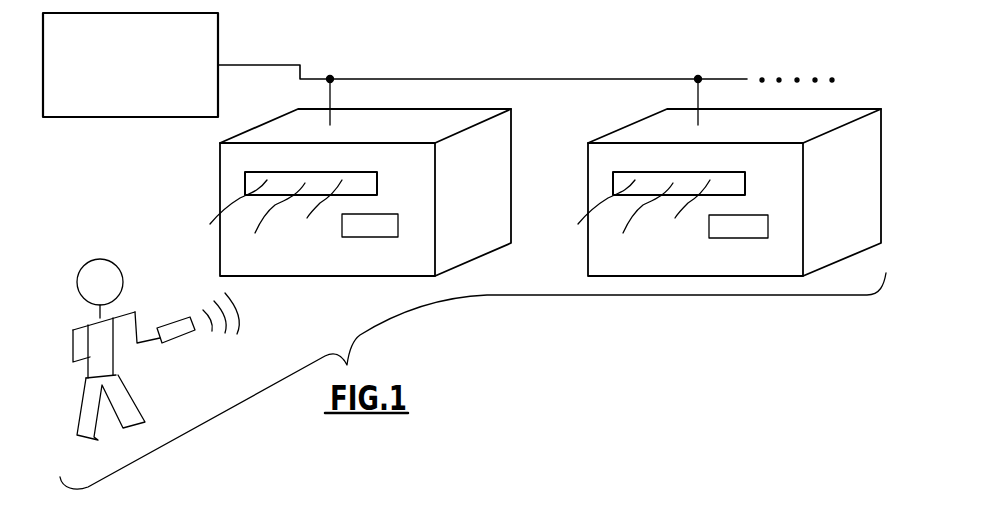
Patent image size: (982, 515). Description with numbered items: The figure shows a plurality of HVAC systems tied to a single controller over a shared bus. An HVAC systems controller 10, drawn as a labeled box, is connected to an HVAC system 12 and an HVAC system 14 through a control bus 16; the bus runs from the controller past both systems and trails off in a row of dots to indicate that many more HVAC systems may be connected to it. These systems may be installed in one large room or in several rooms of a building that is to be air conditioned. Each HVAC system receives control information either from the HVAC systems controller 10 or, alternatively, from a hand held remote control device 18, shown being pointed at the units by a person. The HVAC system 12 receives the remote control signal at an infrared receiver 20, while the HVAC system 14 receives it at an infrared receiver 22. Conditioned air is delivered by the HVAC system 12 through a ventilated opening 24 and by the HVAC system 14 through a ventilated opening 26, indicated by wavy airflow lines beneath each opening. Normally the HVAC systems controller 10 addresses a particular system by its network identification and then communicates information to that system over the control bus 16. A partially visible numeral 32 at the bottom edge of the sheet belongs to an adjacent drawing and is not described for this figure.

The HVAC systems controller 10 is at (219, 33).
The HVAC system 12 is at (362, 192).
The HVAC system 14 is at (731, 192).
The control bus 16 is at (503, 79).
The hand held remote control device 18 is at (183, 338).
The infrared receiver 20 is at (358, 233).
The infrared receiver 22 is at (727, 233).
The ventilated opening 24 is at (247, 180).
The ventilated opening 26 is at (615, 180).
The partially visible element of adjacent figure 32 is at (578, 513).